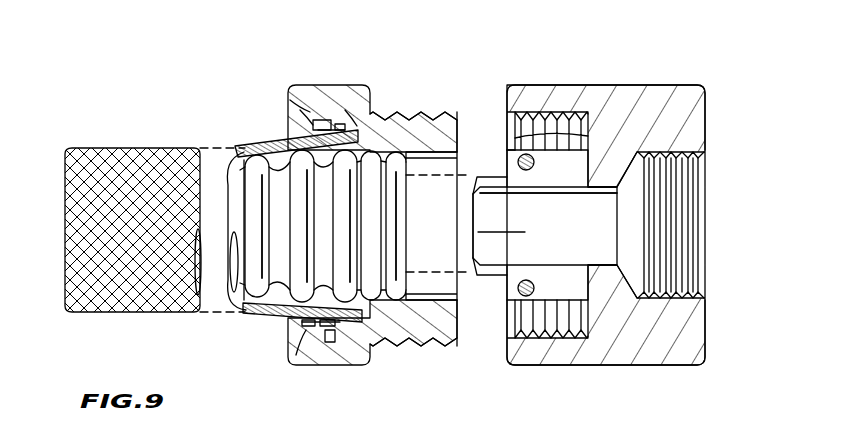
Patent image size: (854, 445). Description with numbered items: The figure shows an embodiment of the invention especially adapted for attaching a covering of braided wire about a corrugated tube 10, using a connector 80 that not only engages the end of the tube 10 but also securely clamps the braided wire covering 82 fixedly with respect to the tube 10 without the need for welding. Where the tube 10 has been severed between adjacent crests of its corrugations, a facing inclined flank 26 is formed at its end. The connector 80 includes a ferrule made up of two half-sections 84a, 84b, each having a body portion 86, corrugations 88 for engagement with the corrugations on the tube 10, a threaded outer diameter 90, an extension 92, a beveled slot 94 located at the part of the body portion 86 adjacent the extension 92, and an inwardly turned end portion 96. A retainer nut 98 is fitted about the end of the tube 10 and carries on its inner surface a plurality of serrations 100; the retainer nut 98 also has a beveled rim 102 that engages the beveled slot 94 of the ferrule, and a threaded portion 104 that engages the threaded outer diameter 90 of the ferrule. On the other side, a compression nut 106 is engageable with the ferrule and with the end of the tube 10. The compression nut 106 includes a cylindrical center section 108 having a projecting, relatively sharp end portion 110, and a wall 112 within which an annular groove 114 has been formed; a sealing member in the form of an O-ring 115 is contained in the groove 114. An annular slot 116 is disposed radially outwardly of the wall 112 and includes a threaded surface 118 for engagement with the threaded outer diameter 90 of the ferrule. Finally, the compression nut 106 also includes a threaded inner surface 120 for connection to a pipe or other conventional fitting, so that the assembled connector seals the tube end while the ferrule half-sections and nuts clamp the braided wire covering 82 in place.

The tube 10 is at (254, 262).
The inclined flank 26 is at (425, 178).
The connector 80 is at (483, 44).
The braided wire covering 82 is at (130, 148).
The ferrule half-section 84a is at (416, 98).
The ferrule half-section 84b is at (403, 348).
The body portion 86 is at (430, 122).
The corrugations 88 is at (336, 178).
The threaded outer diameter 90 is at (386, 118).
The extension 92 is at (283, 143).
The beveled slot 94 is at (343, 120).
The inwardly turned end portion 96 is at (242, 149).
The retainer nut 98 is at (310, 118).
The serrations 100 is at (310, 113).
The beveled rim 102 is at (320, 128).
The threaded portion 104 is at (350, 122).
The compression nut 106 is at (656, 92).
The cylindrical center section 108 is at (572, 194).
The sharp end portion 110 is at (480, 194).
The wall 112 is at (578, 136).
The annular groove 114 is at (535, 162).
The O-ring 115 is at (524, 194).
The annular slot 116 is at (512, 130).
The threaded surface 118 is at (515, 127).
The threaded inner surface 120 is at (700, 156).